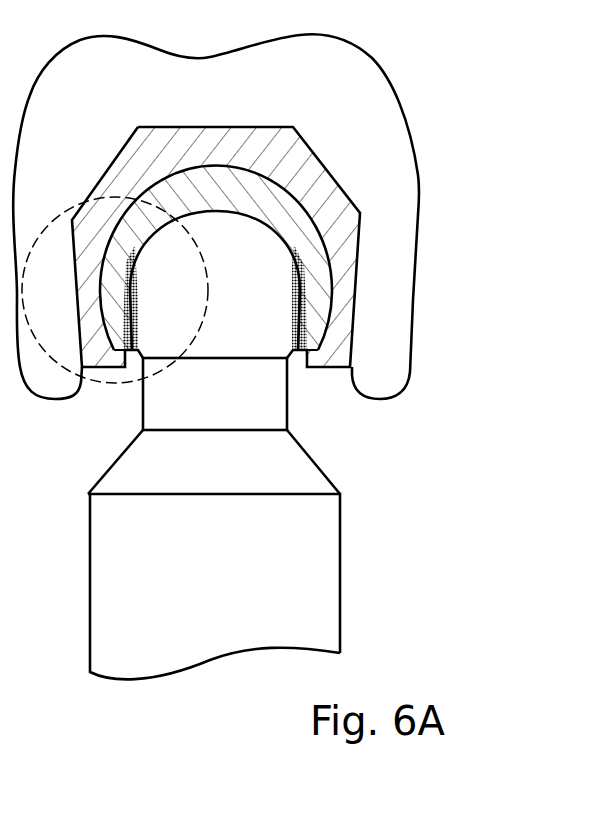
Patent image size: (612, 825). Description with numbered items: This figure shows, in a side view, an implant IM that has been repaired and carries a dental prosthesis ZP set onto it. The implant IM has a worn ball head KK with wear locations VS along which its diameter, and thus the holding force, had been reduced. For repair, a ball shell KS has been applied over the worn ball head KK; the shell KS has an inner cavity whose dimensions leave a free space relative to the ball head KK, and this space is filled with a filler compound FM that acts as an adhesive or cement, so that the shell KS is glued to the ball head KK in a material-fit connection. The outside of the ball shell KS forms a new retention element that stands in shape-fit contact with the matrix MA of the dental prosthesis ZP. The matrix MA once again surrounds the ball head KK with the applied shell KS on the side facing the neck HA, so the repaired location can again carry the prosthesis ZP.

The dental prosthesis ZP is at (352, 89).
The matrix MA is at (280, 165).
The ball shell KS is at (302, 228).
The filler compound FM is at (307, 297).
The wear locations VS is at (310, 325).
The ball head KK is at (215, 313).
The neck HA is at (230, 410).
The implant IM is at (293, 592).